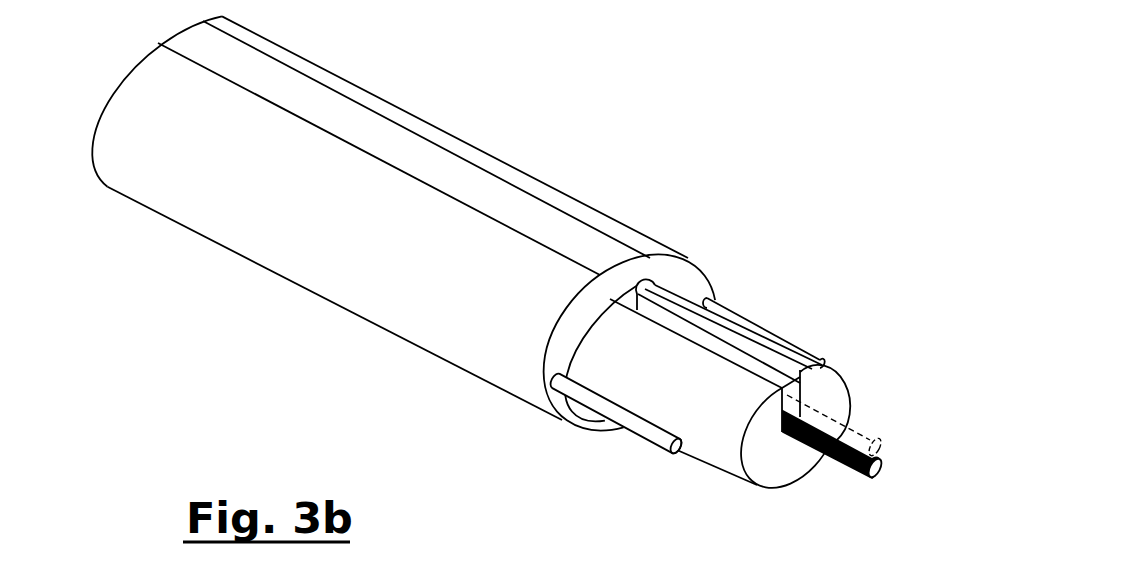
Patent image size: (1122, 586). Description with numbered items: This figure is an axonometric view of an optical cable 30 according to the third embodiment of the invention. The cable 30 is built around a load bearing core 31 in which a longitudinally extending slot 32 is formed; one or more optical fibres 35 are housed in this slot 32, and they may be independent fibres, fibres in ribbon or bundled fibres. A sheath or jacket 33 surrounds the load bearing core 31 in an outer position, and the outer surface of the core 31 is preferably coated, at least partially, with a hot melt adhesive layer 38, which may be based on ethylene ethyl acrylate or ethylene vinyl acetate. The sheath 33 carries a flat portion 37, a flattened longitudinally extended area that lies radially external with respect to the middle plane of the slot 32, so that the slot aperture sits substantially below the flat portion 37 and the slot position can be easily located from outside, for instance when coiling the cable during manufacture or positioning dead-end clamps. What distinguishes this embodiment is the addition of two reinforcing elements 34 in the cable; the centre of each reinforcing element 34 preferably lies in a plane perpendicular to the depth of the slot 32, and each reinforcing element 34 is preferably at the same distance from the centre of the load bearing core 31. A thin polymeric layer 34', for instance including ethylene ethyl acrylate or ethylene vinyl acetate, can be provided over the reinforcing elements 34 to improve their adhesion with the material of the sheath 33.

The cable 30 is at (192, 273).
The load bearing core 31 is at (832, 388).
The slot 32 is at (778, 372).
The sheath 33 is at (452, 342).
The reinforcing element 34 is at (781, 418).
The thin polymeric layer 34' is at (617, 446).
The optical fibre 35 is at (878, 463).
The flat portion 37 is at (543, 223).
The hot melt adhesive layer 38 is at (718, 425).